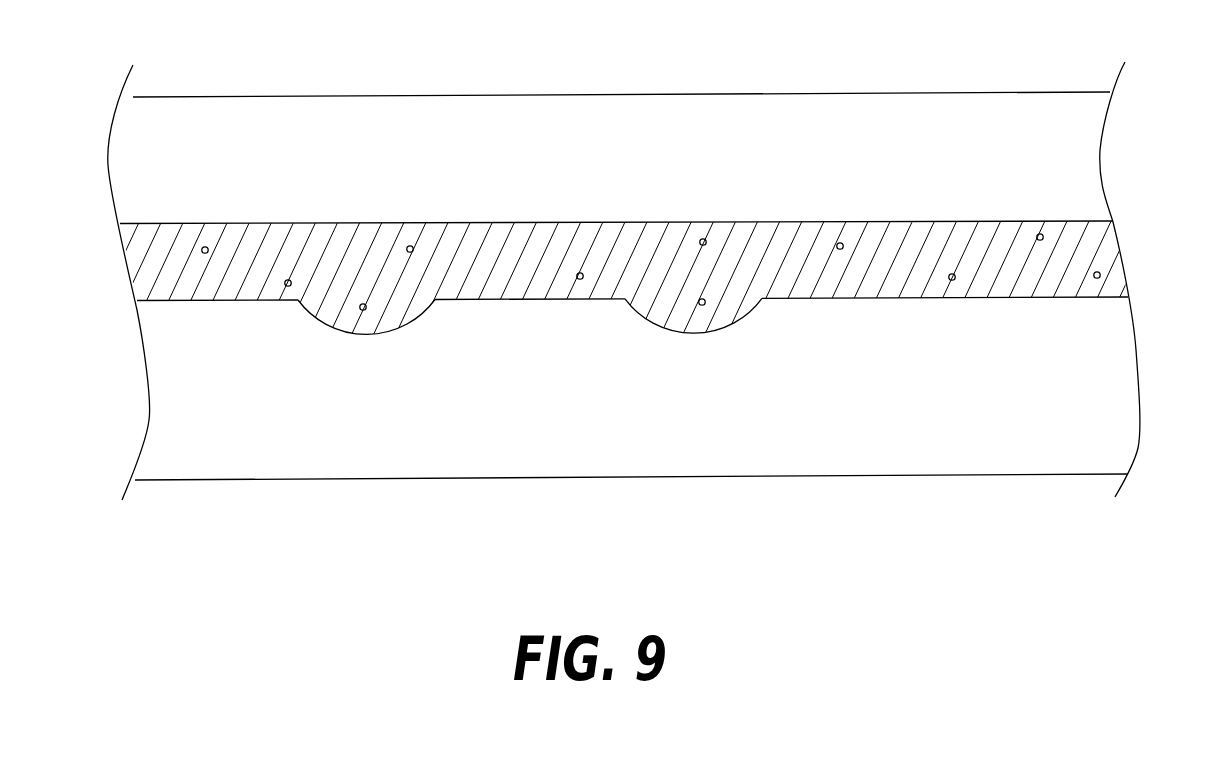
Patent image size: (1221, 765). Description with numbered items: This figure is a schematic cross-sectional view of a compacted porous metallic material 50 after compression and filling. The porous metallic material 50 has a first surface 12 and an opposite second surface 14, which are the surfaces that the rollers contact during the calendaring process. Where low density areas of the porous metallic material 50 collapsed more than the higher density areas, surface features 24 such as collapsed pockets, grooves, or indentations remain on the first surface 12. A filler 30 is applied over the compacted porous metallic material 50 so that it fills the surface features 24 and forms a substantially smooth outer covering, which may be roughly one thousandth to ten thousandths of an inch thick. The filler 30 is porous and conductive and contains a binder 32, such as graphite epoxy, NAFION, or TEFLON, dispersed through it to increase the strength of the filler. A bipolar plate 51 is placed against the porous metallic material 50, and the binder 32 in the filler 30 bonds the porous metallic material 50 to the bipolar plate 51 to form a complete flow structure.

The first surface 12 is at (180, 300).
The second surface 14 is at (158, 480).
The surface features 24 is at (393, 335).
The filler 30 is at (1117, 243).
The binder 32 is at (287, 290).
The porous metallic material 50 is at (1043, 460).
The bipolar plate 51 is at (1016, 122).